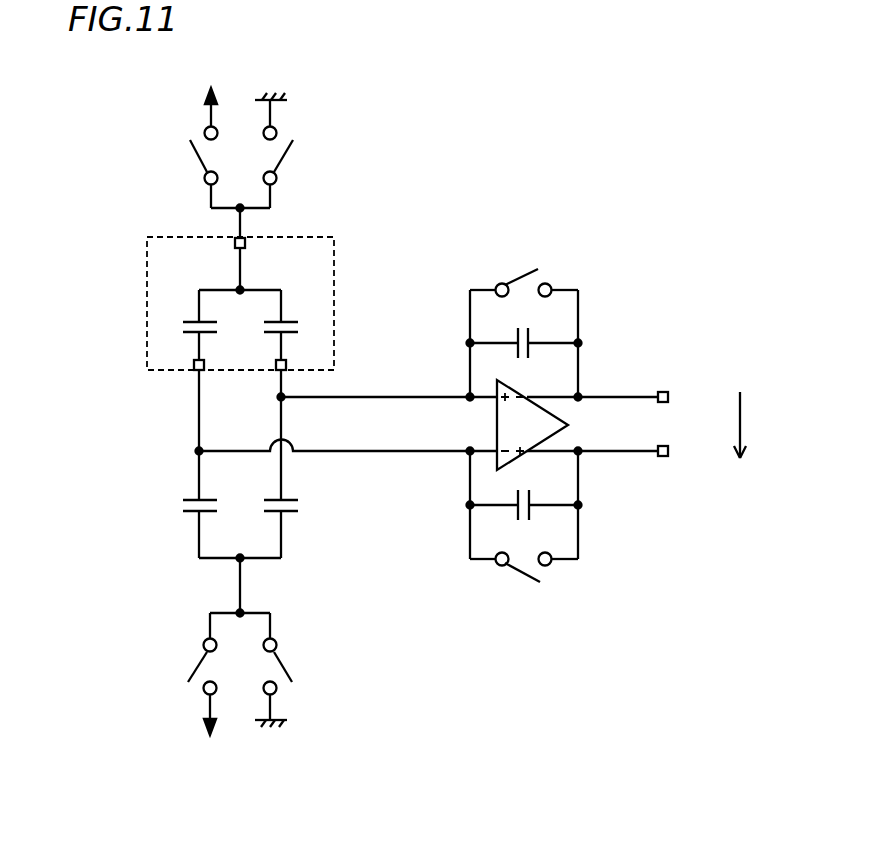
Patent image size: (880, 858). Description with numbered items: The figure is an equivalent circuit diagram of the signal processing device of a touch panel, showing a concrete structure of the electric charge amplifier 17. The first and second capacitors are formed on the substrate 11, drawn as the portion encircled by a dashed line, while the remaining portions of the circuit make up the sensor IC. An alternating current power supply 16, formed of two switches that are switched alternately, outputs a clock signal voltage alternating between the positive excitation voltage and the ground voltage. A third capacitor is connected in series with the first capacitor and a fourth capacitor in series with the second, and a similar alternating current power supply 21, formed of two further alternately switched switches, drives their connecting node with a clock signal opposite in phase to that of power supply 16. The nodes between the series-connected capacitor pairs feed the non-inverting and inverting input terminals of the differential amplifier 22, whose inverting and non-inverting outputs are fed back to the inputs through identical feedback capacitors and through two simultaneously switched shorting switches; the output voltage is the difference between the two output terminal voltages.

The substrate 11 is at (335, 288).
The alternating current power supply 16 is at (163, 123).
The electric charge amplifier 17 is at (413, 640).
The alternating current power supply 21 is at (162, 622).
The differential amplifier 22 is at (578, 425).